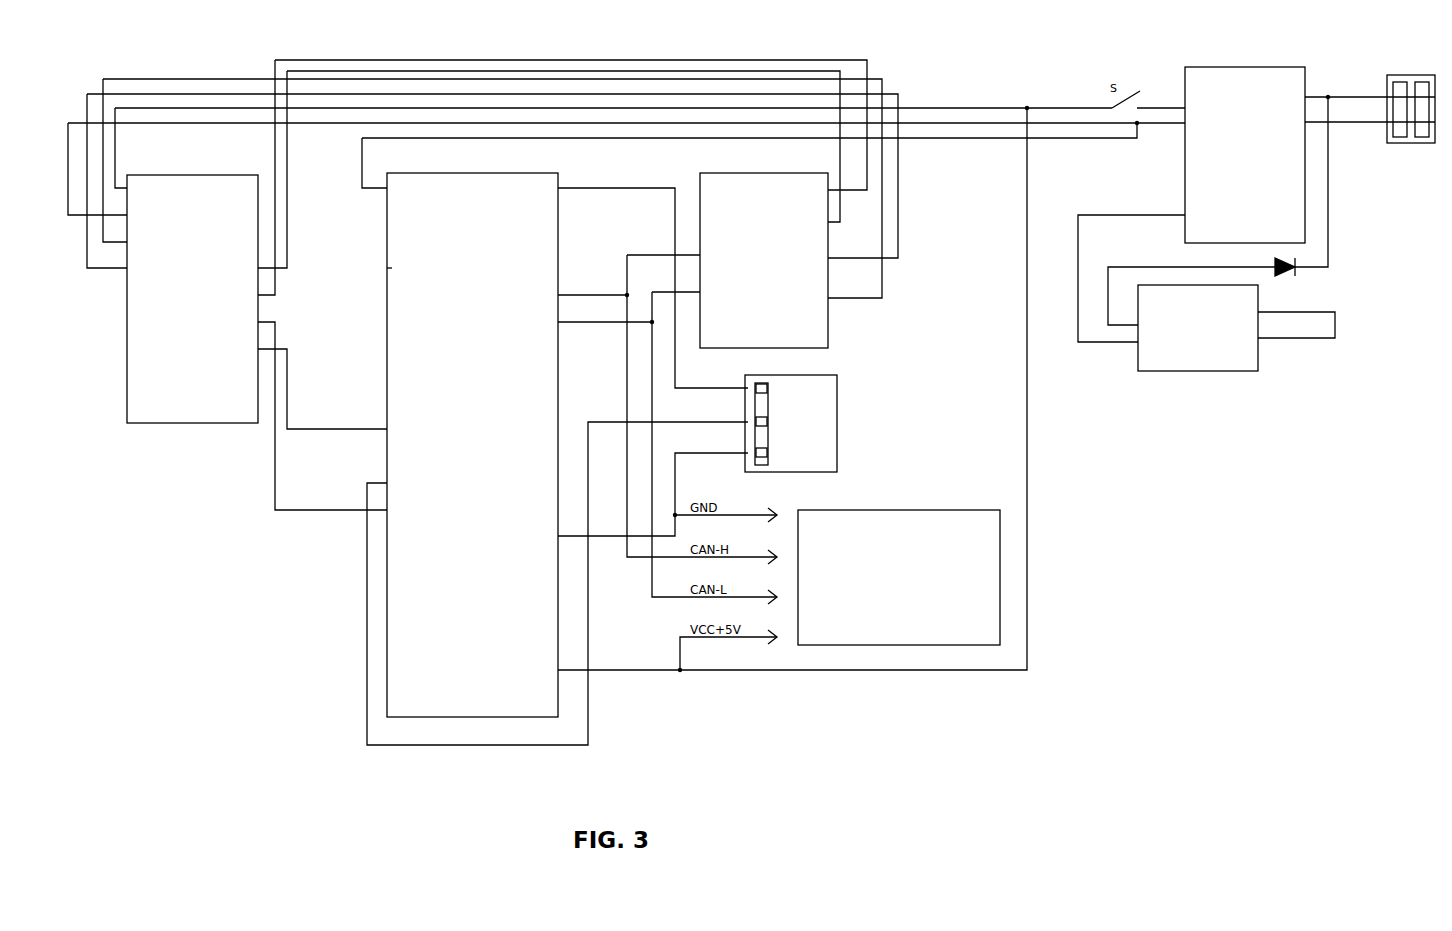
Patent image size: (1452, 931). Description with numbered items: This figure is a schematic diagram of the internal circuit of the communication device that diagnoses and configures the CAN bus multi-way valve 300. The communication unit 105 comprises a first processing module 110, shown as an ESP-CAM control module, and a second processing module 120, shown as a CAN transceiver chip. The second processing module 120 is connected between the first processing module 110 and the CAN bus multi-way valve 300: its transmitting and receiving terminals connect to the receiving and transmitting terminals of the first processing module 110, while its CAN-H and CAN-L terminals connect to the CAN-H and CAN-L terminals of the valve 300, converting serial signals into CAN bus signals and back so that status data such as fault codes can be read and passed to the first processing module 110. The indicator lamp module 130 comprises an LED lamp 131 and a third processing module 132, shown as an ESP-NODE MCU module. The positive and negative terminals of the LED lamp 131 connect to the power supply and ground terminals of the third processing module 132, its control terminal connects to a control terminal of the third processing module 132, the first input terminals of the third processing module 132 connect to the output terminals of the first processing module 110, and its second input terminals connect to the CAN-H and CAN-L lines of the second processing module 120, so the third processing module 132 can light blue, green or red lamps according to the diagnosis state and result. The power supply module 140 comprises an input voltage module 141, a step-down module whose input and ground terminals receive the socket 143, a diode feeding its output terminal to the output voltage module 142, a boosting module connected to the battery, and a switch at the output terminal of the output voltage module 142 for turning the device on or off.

The communication unit 105 is at (297, 548).
The first processing module 110 is at (238, 416).
The second processing module 120 is at (818, 330).
The indicator lamp module 130 is at (197, 643).
The LED lamp 131 is at (825, 432).
The third processing module 132 is at (395, 251).
The power supply module 140 is at (297, 643).
The input voltage module 141 is at (1187, 363).
The output voltage module 142 is at (1200, 153).
The socket 143 is at (1298, 340).
The CAN bus multi-way valve 300 is at (899, 577).